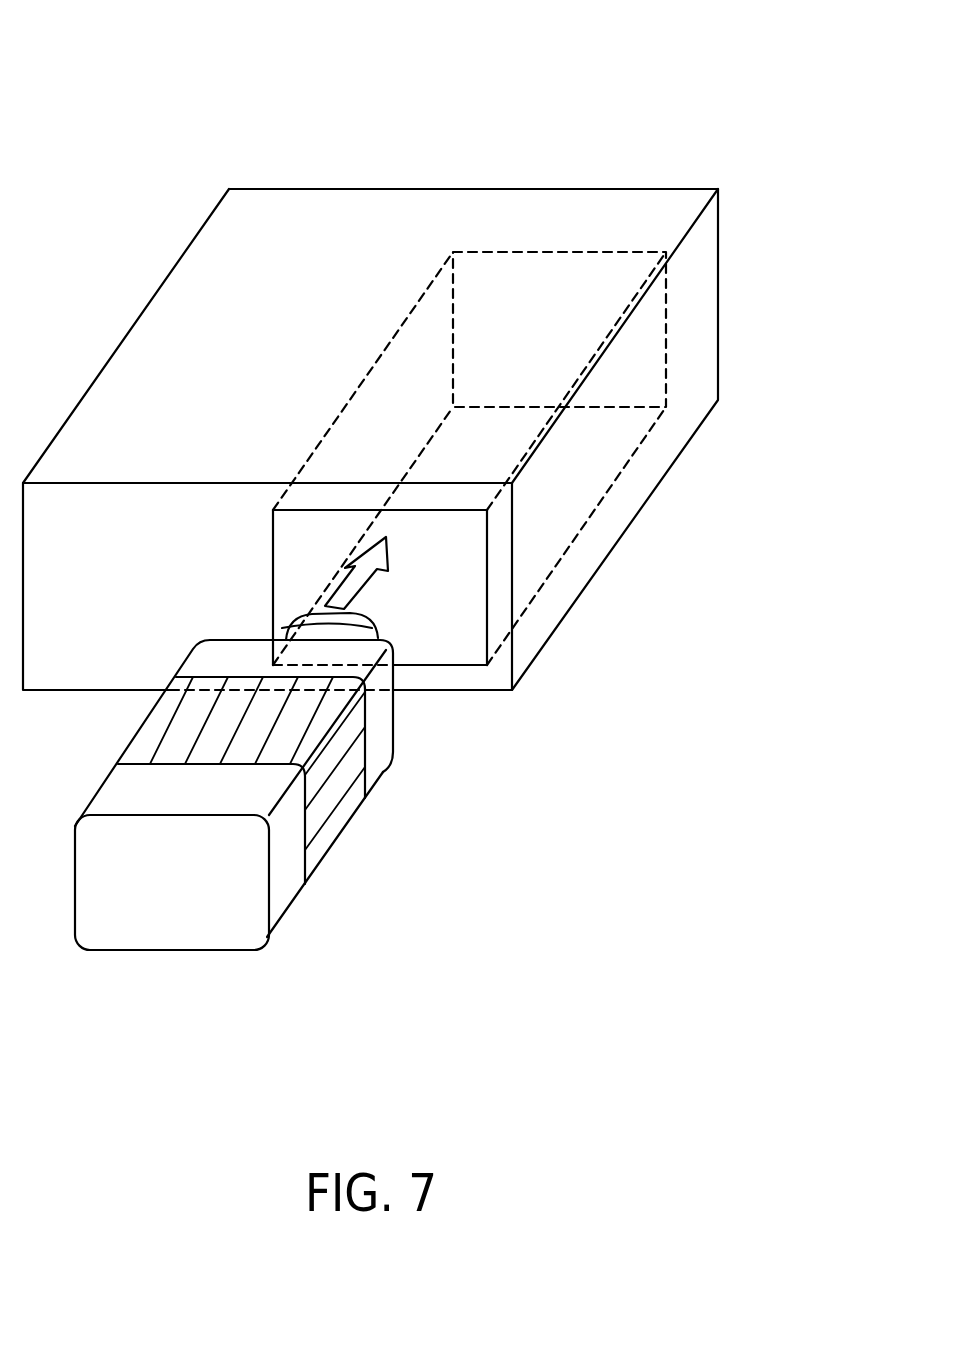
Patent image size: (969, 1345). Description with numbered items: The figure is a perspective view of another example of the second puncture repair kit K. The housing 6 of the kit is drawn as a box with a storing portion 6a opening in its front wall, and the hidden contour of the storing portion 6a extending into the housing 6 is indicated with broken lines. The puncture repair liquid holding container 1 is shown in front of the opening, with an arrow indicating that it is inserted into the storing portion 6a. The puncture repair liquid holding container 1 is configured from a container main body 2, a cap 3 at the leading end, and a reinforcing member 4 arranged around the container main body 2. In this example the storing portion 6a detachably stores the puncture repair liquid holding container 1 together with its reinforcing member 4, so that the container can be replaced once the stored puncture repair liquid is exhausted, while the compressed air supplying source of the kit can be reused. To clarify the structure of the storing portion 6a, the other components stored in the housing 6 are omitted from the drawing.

The puncture repair kit K is at (597, 123).
The housing 6 is at (470, 197).
The storing portion 6a is at (477, 612).
The puncture repair liquid holding container 1 is at (147, 966).
The container main body 2 is at (287, 898).
The cap 3 is at (345, 622).
The reinforcing member 4 is at (333, 811).